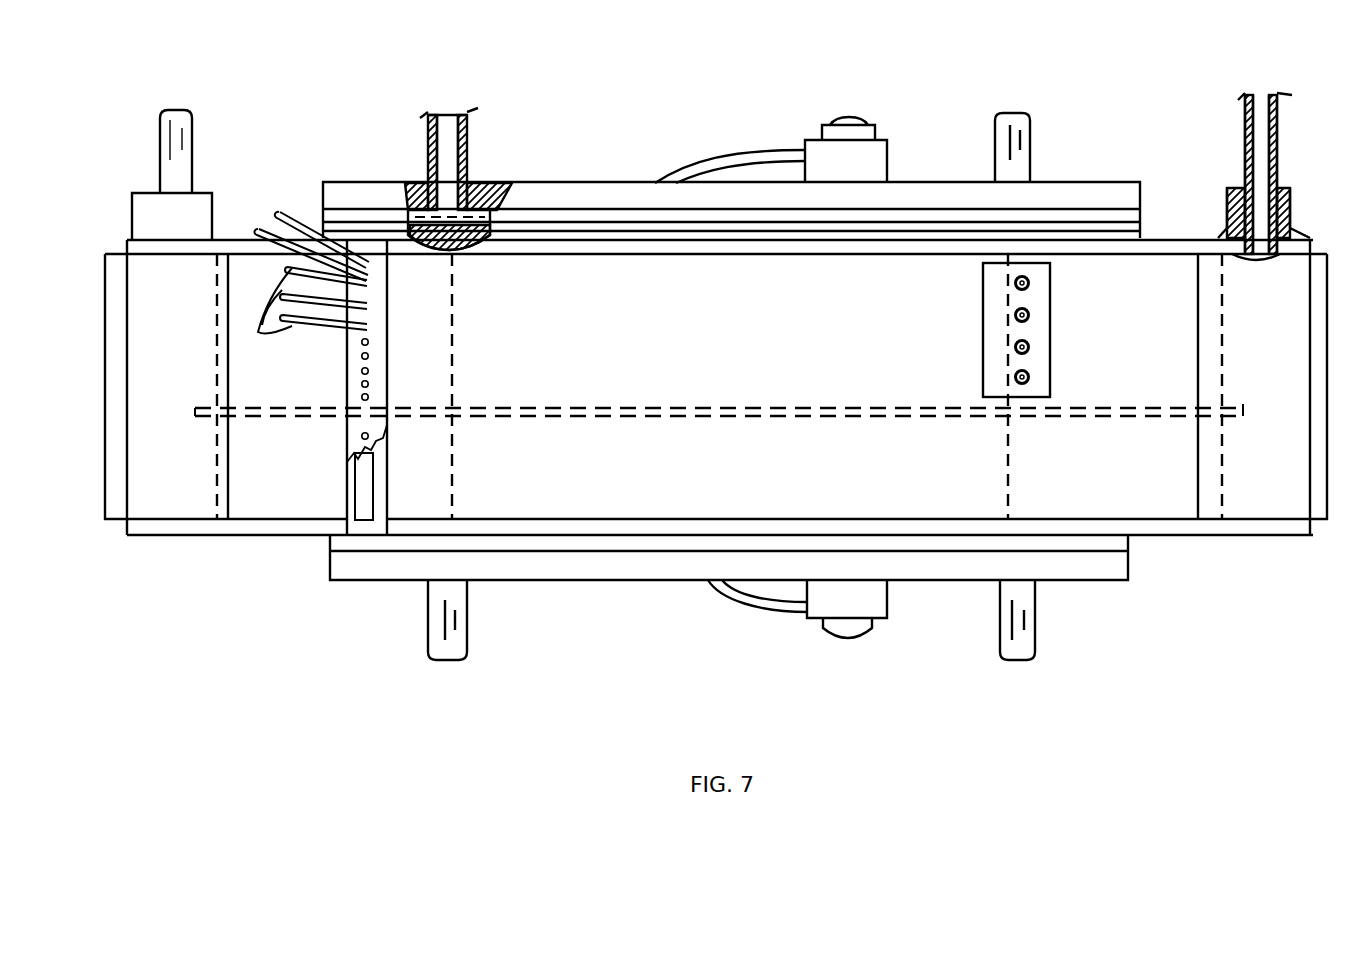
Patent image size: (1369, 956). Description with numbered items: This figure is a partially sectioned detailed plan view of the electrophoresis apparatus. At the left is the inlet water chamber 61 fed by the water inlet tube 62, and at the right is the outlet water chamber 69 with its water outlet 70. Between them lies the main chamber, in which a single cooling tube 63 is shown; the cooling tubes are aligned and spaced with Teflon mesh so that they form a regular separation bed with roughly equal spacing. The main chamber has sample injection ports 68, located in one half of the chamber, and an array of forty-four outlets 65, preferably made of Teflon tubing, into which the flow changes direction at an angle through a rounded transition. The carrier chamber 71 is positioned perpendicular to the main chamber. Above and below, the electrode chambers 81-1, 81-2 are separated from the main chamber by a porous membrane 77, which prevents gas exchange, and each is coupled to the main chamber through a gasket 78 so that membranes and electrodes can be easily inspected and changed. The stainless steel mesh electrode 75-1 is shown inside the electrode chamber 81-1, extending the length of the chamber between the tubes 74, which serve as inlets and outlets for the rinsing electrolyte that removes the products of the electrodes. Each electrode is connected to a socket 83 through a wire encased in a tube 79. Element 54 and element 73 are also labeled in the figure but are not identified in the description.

The tape guide plate 54 is at (378, 280).
The inlet water chamber 61 is at (177, 351).
The water inlet tube 62 is at (160, 153).
The cooling tube 63 is at (1118, 412).
The outlets 65 is at (306, 291).
The sample injection ports 68 is at (1014, 283).
The outlet water chamber 69 is at (1276, 376).
The water outlet 70 is at (1245, 152).
The carrier chamber 71 is at (750, 158).
The housing rail 73 is at (503, 247).
The tubes 74 is at (428, 142).
The mesh electrode 75-1 is at (480, 188).
The porous membrane 77 is at (548, 232).
The gasket 78 is at (613, 228).
The tubes 79 is at (773, 608).
The electrode chamber 81-1 is at (1140, 216).
The electrode chamber 81-2 is at (1135, 545).
The sockets 83 is at (880, 135).